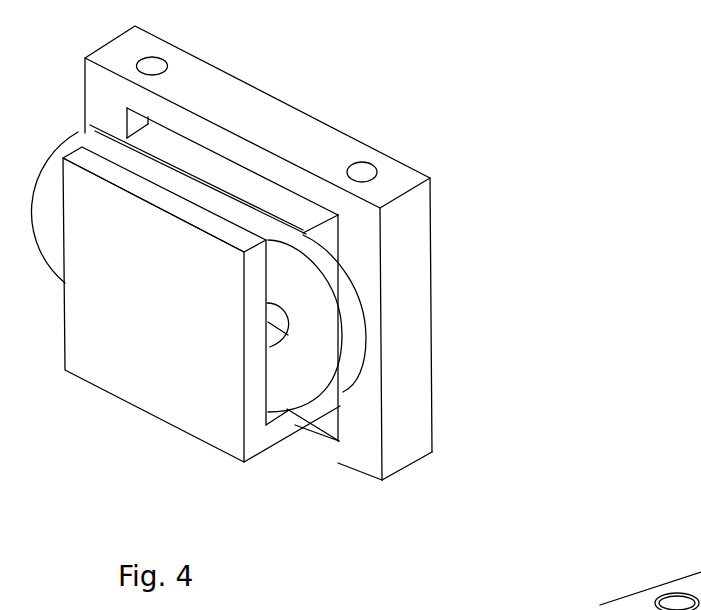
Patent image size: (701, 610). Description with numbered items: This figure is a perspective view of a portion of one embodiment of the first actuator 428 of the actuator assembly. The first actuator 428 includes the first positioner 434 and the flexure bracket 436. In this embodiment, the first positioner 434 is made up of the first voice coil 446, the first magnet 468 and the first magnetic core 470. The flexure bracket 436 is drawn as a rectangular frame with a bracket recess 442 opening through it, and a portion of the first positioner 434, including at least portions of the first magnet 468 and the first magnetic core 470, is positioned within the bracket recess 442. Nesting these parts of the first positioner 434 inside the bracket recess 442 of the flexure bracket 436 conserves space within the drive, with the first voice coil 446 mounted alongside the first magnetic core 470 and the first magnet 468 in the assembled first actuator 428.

The first actuator 428 is at (484, 161).
The flexure bracket 436 is at (416, 265).
The first magnet 468 is at (248, 188).
The first magnetic core 470 is at (172, 405).
The first voice coil 446 is at (353, 348).
The first positioner 434 is at (277, 450).
The bracket recess 442 is at (332, 433).